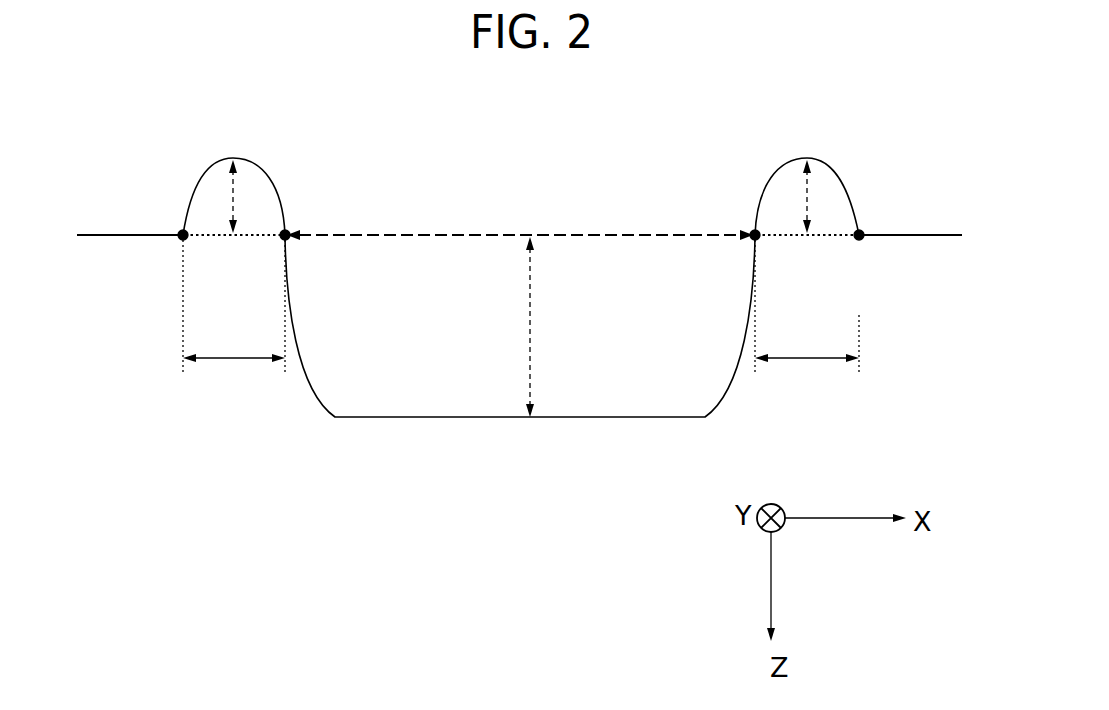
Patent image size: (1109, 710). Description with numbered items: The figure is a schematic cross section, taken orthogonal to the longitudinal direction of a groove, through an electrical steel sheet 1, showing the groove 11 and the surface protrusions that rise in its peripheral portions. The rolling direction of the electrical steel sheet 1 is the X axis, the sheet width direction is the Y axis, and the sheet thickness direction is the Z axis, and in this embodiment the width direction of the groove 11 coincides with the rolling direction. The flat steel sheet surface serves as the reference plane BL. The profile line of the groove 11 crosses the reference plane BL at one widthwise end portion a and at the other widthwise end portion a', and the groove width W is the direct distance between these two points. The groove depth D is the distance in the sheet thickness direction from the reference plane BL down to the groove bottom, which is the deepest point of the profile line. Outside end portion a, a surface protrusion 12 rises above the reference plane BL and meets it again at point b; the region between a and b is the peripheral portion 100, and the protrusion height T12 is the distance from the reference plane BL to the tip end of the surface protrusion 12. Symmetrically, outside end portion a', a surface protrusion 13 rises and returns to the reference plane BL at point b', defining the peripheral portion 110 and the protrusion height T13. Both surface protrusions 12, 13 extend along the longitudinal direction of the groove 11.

The electrical steel sheet 1 is at (945, 235).
The groove 11 is at (497, 232).
The surface protrusion 12 is at (252, 160).
The surface protrusion 13 is at (822, 160).
The peripheral portion 100 is at (233, 360).
The peripheral portion 110 is at (805, 360).
The protrusion height T12 is at (235, 196).
The protrusion height T13 is at (807, 197).
The groove width W is at (593, 236).
The groove depth D is at (531, 308).
The reference plane BL is at (922, 237).
The one widthwise end portion a is at (255, 277).
The point b is at (152, 277).
The other widthwise end portion a' is at (779, 269).
The point b' is at (866, 270).